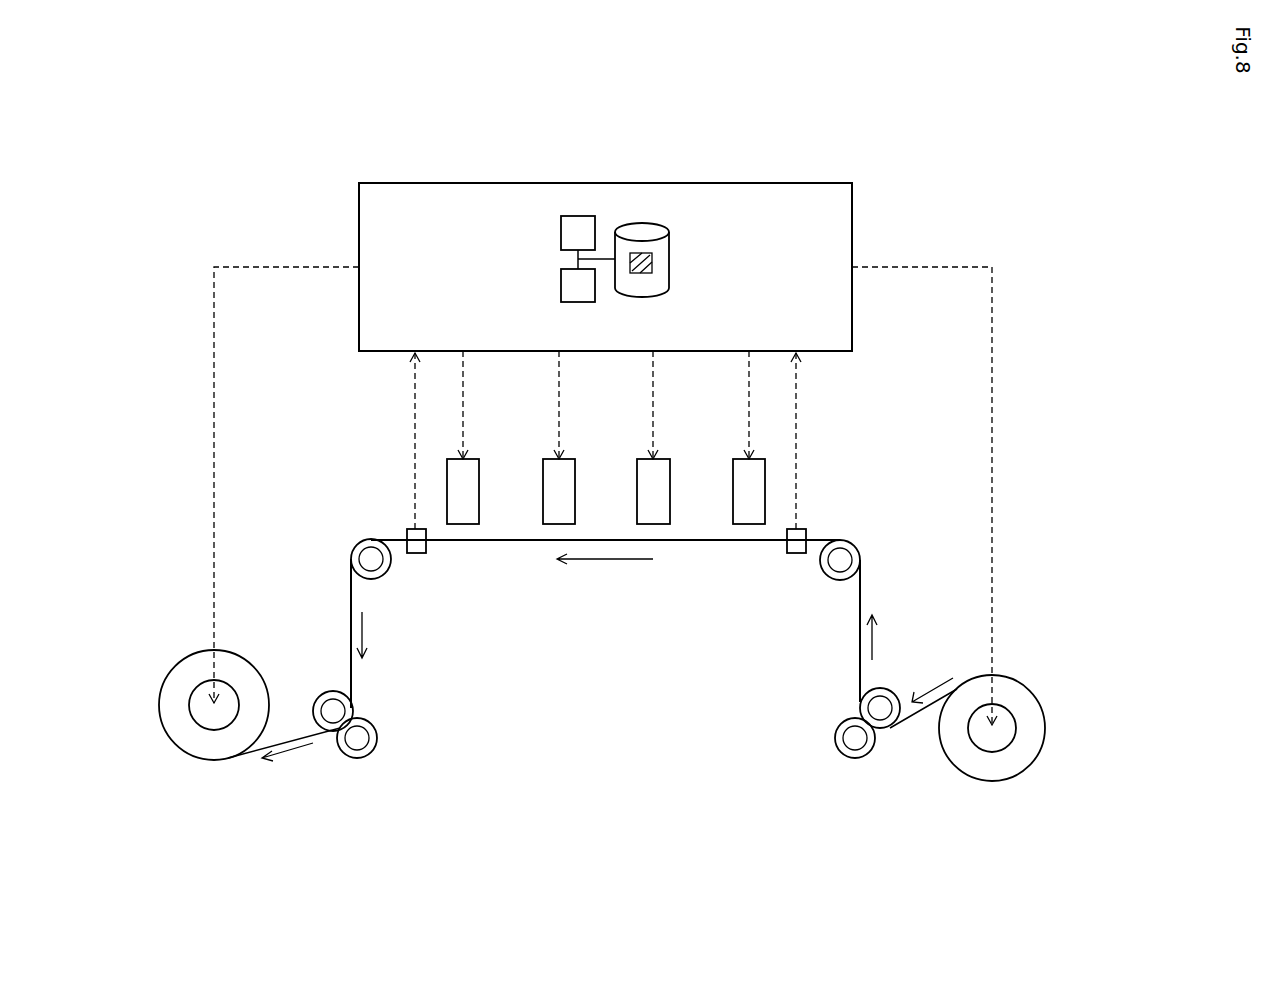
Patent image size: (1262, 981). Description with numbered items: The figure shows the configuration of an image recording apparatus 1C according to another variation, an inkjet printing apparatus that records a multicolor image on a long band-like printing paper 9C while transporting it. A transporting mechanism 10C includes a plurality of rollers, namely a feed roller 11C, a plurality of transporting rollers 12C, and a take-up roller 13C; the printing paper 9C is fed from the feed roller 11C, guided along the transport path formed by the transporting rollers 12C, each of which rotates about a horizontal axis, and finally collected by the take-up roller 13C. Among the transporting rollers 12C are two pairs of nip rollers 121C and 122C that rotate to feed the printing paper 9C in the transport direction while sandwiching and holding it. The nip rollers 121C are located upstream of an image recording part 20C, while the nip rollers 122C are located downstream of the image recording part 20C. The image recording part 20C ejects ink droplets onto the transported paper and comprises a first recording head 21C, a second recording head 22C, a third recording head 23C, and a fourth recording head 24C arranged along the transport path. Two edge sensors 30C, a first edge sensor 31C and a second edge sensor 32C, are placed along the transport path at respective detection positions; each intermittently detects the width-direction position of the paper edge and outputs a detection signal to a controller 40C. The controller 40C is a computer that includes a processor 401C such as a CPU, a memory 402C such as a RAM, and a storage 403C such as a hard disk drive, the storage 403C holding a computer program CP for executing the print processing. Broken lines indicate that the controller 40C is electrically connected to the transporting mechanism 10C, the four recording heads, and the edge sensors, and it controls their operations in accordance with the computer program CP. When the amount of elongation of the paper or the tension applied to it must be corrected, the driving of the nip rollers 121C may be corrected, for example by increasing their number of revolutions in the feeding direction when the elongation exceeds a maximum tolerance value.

The image recording apparatus 1C is at (308, 185).
The controller 40C is at (767, 183).
The processor 401C is at (561, 232).
The memory 402C is at (561, 285).
The storage 403C is at (669, 262).
The computer program CP is at (640, 274).
The image recording part 20C is at (438, 459).
The first recording head 21C is at (757, 458).
The second recording head 22C is at (662, 458).
The third recording head 23C is at (568, 458).
The fourth recording head 24C is at (472, 458).
The transporting mechanism 10C is at (828, 522).
The transporting rollers 12C is at (355, 546).
The printing paper 9C is at (351, 625).
The edge sensor 30C is at (616, 582).
The first edge sensor 31C is at (797, 553).
The second edge sensor 32C is at (418, 553).
The nip rollers 122C is at (366, 730).
The nip rollers 121C is at (840, 731).
The take-up roller 13C is at (230, 700).
The feed roller 11C is at (980, 765).